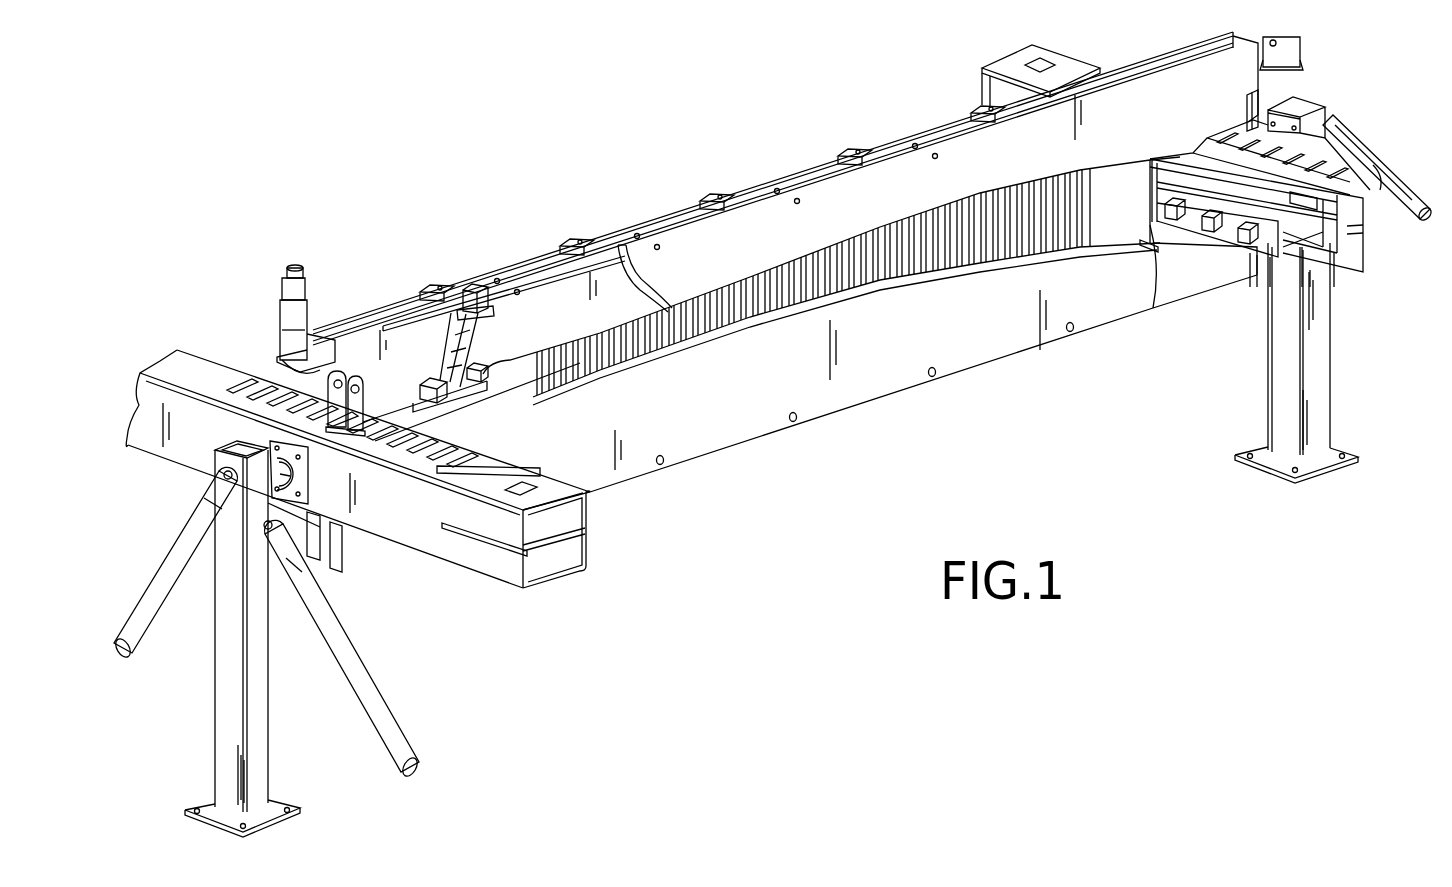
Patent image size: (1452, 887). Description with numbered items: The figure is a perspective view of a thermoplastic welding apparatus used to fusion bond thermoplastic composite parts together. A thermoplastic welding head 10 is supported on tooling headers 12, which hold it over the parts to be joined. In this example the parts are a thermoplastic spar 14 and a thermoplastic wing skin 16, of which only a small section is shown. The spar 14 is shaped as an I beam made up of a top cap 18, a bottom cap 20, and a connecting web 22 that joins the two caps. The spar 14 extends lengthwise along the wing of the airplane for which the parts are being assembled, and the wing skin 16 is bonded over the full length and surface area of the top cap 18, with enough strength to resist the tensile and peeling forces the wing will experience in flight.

The thermoplastic welding head 10 is at (423, 341).
The tooling headers 12 is at (891, 142).
The thermoplastic spar 14 is at (933, 252).
The thermoplastic wing skin 16 is at (631, 318).
The top cap 18 is at (588, 337).
The bottom cap 20 is at (1141, 250).
The connecting web 22 is at (1129, 216).